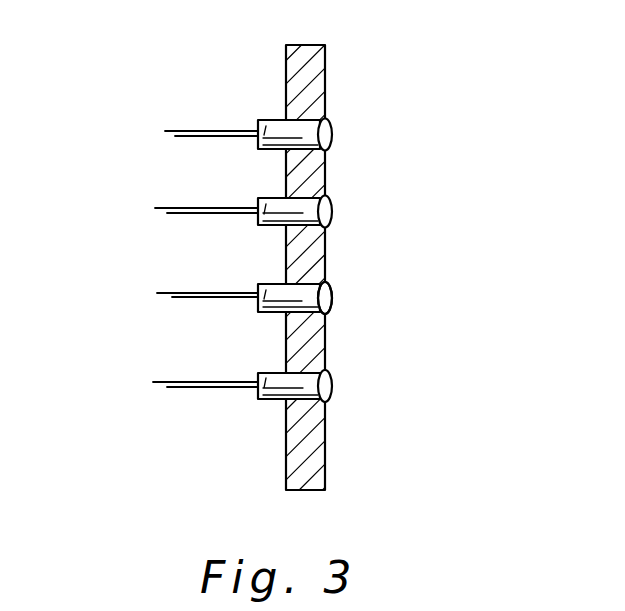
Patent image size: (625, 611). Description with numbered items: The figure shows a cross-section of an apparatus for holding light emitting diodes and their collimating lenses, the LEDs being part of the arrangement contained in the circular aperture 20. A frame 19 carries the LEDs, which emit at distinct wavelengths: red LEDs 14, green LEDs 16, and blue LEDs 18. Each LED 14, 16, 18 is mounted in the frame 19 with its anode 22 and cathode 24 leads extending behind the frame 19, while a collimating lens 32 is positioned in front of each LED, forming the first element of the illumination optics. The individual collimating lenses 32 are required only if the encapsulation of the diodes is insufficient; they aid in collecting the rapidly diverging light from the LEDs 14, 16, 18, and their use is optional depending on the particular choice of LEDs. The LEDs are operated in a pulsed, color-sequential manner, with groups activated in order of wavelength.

The circular aperture 20 is at (109, 71).
The frame 19 is at (312, 80).
The red LED 14 is at (272, 121).
The anode 22 is at (178, 131).
The cathode 24 is at (184, 137).
The blue LED 18 is at (264, 209).
The green LED 16 is at (276, 394).
The collimating lens 32 is at (334, 296).